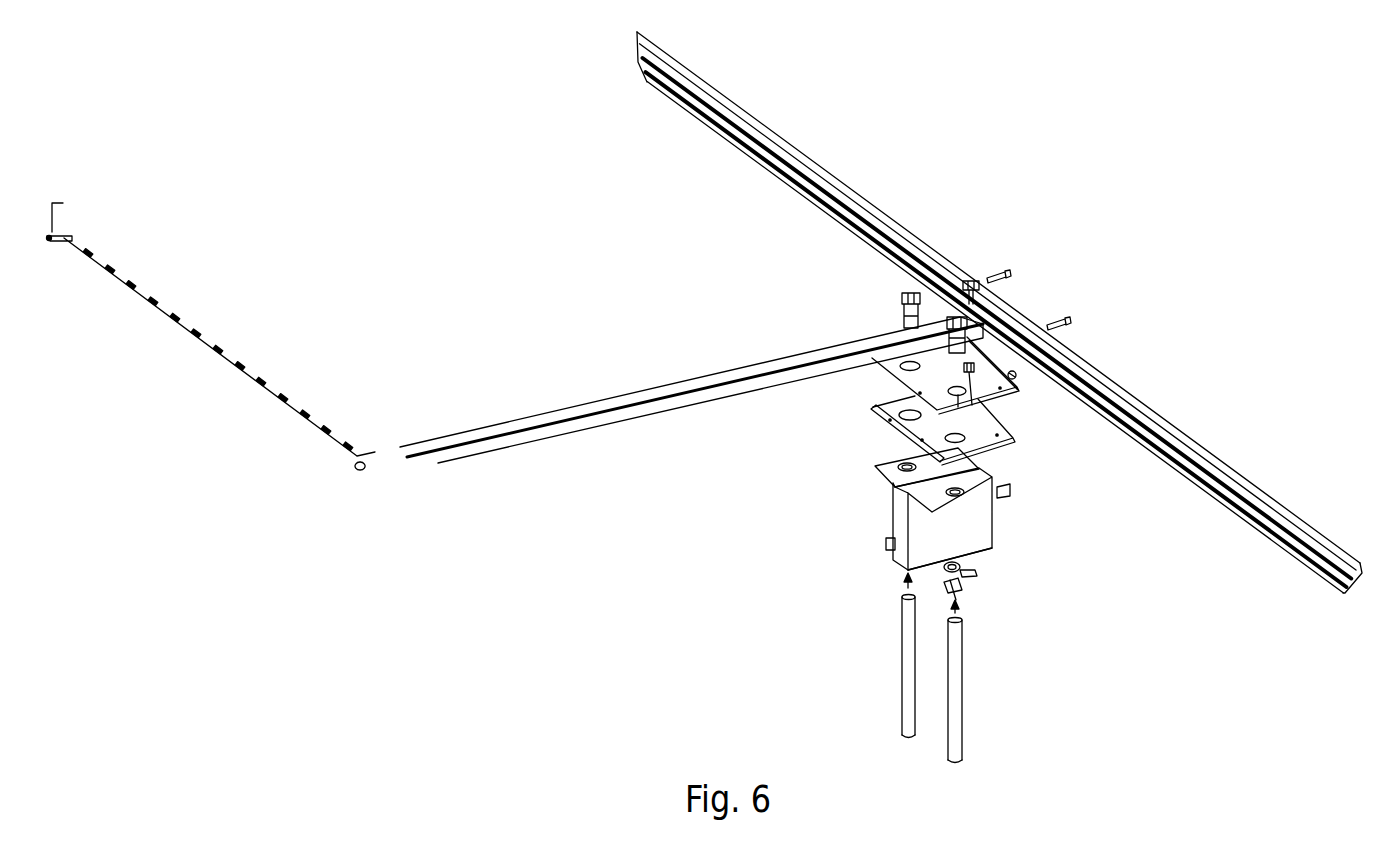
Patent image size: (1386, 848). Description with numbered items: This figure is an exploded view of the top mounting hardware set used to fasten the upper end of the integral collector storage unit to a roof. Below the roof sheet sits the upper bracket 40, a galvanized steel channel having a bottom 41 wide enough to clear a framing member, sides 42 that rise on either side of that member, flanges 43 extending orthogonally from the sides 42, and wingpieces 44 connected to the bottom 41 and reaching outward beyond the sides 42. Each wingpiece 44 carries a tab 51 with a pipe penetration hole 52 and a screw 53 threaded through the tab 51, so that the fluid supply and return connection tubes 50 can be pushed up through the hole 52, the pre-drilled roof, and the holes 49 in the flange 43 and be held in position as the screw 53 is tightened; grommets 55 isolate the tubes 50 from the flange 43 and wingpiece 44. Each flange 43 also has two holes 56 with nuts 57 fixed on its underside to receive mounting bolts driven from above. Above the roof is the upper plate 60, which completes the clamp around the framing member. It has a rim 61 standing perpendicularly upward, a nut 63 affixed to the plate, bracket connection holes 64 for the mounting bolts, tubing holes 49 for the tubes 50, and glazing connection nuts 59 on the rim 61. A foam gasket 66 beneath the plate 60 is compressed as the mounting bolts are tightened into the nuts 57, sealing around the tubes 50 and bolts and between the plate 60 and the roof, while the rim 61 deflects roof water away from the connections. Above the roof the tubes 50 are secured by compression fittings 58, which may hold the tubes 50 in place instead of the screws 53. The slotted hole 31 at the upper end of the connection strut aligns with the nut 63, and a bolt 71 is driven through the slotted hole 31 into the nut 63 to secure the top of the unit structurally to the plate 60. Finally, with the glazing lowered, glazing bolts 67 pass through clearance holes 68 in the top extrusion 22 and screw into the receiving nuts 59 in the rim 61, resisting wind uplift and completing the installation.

The top extrusion 22 is at (1093, 371).
The slotted hole 31 is at (958, 300).
The upper bracket 40 is at (982, 520).
The bottom 41 is at (908, 568).
The sides 42 is at (895, 510).
The flanges 43 is at (962, 463).
The wingpieces 44 is at (886, 548).
The holes 49 is at (912, 443).
The connection tubes 50 is at (958, 720).
The tab 51 is at (977, 573).
The pipe penetration hole 52 is at (962, 562).
The screw 53 is at (960, 590).
The grommets 55 is at (952, 582).
The holes 56 is at (873, 470).
The nuts 57 is at (1010, 492).
The compression fittings 58 is at (902, 298).
The nuts 59 is at (1015, 375).
The upper plate 60 is at (1012, 440).
The rim 61 is at (1020, 388).
The nut 63 is at (978, 405).
The bracket connection holes 64 is at (898, 370).
The foam gasket 66 is at (958, 407).
The glazing bolts 67 is at (1072, 322).
The clearance holes 68 is at (1020, 332).
The bolt 71 is at (972, 280).